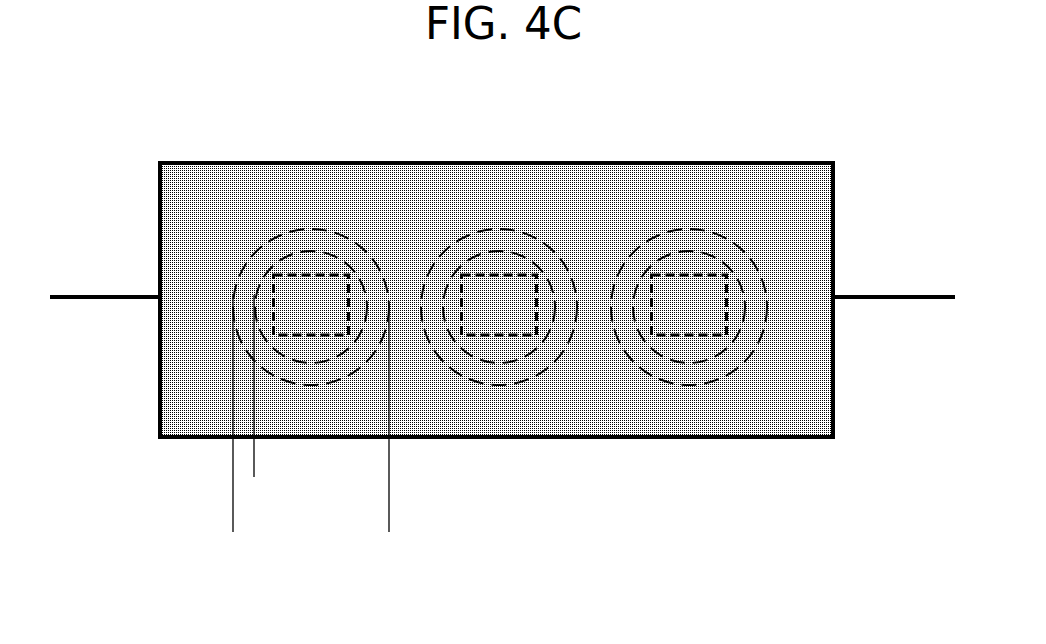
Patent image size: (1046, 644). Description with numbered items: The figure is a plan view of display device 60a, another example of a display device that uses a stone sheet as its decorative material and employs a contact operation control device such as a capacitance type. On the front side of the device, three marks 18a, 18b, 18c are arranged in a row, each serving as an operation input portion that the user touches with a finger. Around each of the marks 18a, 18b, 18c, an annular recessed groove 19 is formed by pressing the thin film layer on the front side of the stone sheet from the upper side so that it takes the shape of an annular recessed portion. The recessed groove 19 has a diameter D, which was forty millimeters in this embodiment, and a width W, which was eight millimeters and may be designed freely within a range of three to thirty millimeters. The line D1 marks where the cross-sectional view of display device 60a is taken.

The display device 60a is at (92, 160).
The annular recessed groove 19 is at (295, 242).
The mark 18a is at (310, 303).
The mark 18b is at (499, 303).
The mark 18c is at (689, 303).
The line D1- D1 is at (83, 295).
The width of recessed groove W is at (197, 465).
The diameter of recessed groove D is at (389, 522).